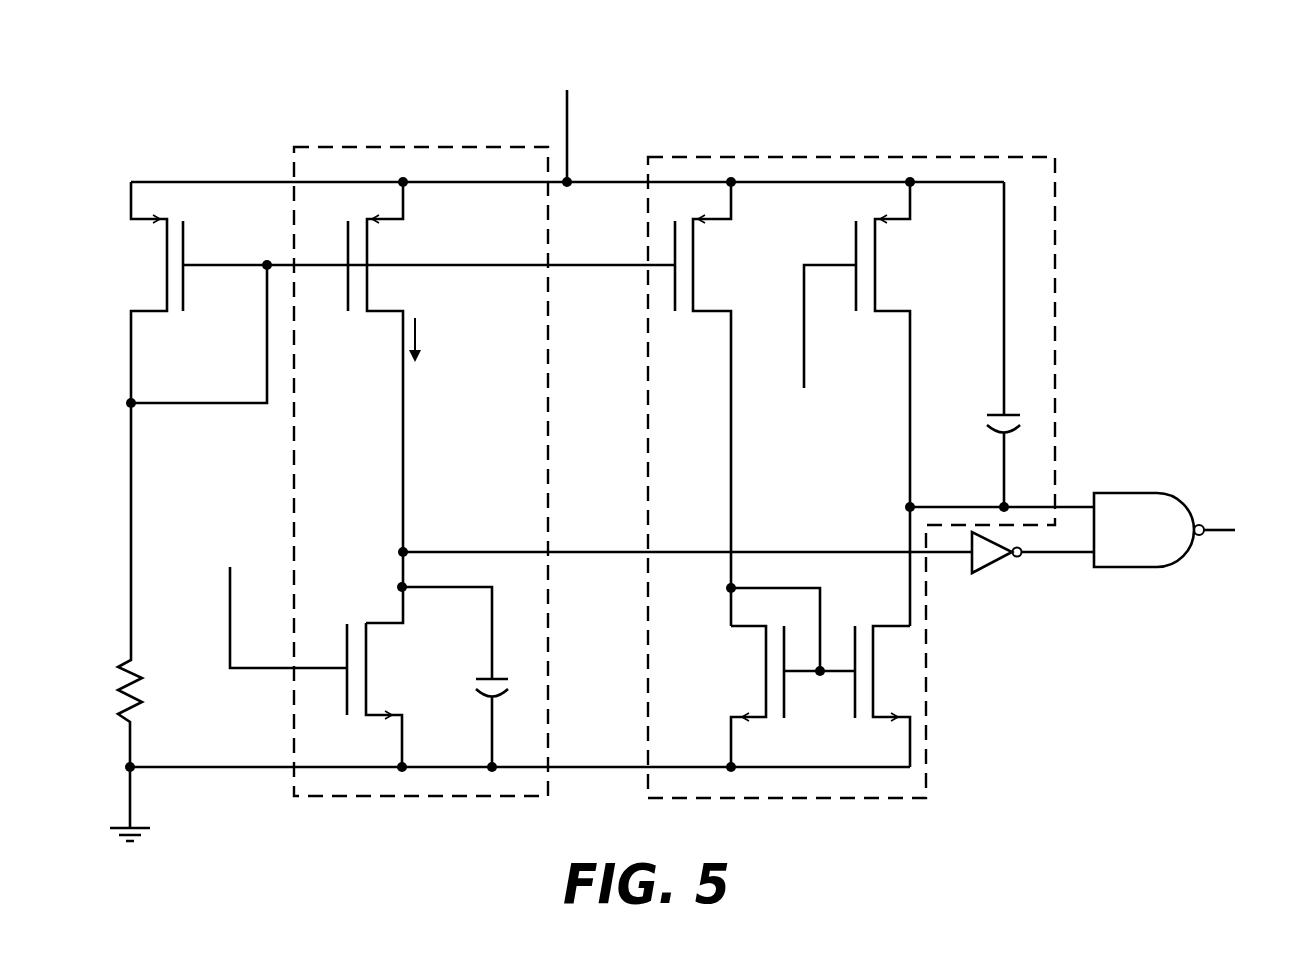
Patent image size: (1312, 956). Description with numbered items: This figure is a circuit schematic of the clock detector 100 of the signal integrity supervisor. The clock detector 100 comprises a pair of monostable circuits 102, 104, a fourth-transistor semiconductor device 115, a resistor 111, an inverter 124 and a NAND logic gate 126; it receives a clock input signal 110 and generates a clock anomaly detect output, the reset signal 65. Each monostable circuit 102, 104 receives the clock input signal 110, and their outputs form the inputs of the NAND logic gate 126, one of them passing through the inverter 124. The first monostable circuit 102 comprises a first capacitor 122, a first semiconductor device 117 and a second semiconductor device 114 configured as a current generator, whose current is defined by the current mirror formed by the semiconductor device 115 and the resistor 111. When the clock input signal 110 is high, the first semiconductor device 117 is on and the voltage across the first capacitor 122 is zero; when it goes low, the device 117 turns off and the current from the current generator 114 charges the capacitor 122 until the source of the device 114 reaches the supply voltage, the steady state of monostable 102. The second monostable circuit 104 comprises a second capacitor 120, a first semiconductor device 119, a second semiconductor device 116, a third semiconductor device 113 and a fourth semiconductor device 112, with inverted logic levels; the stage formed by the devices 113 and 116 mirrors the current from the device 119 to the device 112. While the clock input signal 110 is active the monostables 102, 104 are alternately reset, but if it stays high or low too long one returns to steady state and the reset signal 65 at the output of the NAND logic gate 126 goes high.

The clock detector 100 is at (787, 87).
The first monostable circuit 102 is at (400, 147).
The second monostable circuit 104 is at (757, 157).
The clock input signal 110 is at (803, 300).
The resistor R1 111 is at (137, 665).
The fourth semiconductor device M1 112 is at (900, 625).
The third semiconductor device M2 113 is at (705, 222).
The second semiconductor device M3 114 is at (378, 222).
The semiconductor device M4 115 is at (154, 222).
The second semiconductor device M5 116 is at (747, 720).
The first semiconductor device M6 117 is at (377, 717).
The first semiconductor device M7 119 is at (884, 222).
The capacitor C0 120 is at (1000, 414).
The capacitor C1 122 is at (490, 678).
The inverter 124 is at (993, 567).
The NAND logic gate 126 is at (1115, 567).
The reset signal 65 is at (1215, 531).